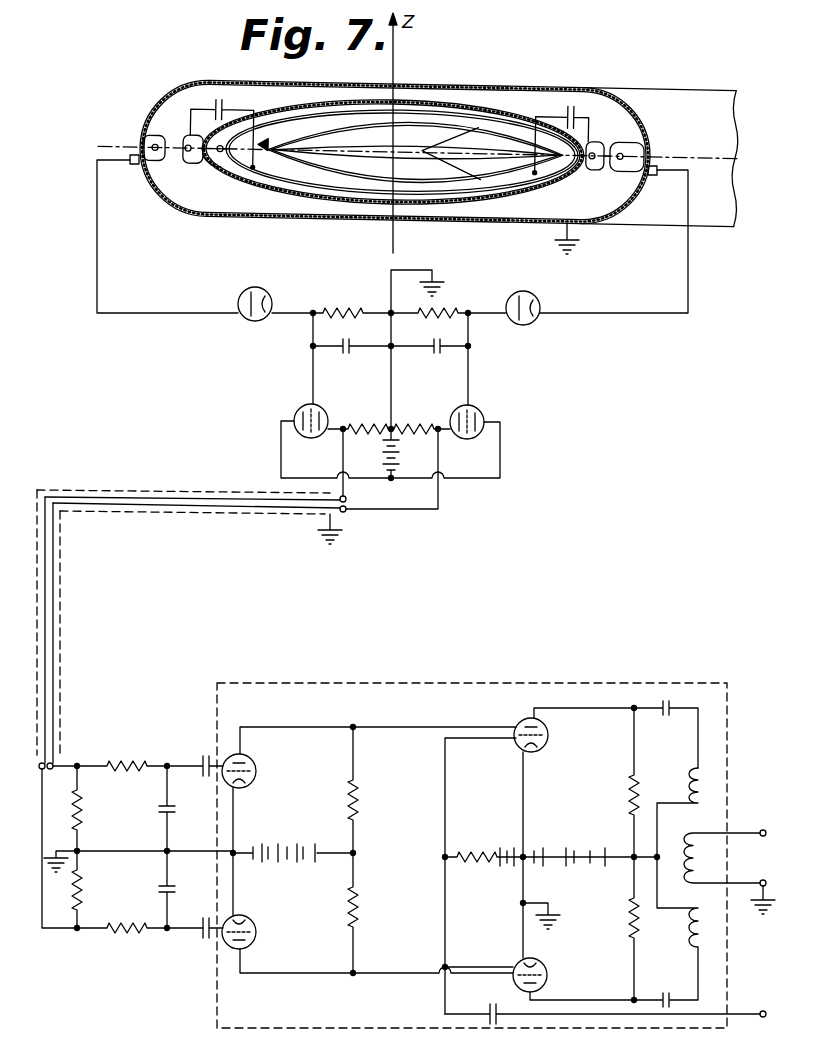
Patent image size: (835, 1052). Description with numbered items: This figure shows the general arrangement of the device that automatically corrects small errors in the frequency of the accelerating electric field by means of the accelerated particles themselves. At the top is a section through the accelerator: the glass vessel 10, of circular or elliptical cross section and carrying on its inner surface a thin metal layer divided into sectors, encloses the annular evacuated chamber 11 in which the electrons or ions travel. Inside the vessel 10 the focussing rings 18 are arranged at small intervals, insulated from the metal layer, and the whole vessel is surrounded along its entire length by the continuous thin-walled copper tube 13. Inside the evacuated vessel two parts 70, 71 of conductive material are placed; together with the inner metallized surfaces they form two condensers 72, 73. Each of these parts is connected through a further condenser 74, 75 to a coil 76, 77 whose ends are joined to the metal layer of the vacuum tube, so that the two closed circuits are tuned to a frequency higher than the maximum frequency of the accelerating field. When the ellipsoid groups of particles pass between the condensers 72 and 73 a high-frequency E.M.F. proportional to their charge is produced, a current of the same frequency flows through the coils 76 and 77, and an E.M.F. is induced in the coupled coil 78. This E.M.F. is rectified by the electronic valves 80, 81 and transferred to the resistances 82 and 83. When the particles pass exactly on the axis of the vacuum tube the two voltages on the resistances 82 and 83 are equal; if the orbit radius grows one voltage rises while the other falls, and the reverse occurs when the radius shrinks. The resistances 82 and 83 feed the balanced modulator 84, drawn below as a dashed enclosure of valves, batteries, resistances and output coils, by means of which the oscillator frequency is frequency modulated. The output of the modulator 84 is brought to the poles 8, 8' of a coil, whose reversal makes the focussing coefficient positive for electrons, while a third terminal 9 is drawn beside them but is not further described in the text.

The tube 13 is at (316, 84).
The glass vessel 10 is at (335, 103).
The annular evacuated chamber 11 is at (430, 110).
The rings 18 is at (352, 150).
The conductive part 70 is at (520, 140).
The conductive part 71 is at (258, 116).
The condenser 72 is at (545, 172).
The condenser 73 is at (220, 172).
The condenser 74 is at (158, 166).
The condenser 75 is at (222, 108).
The coil 76 is at (598, 166).
The coil 77 is at (190, 167).
The coil 78 is at (624, 138).
The electronic valve 80 is at (540, 302).
The electronic valve 81 is at (268, 300).
The resistance 82 is at (81, 887).
The resistance 83 is at (81, 807).
The balanced modulator 84 is at (447, 683).
The pole of the coil 8 is at (771, 832).
The pole of the coil 8' is at (773, 882).
The output terminal 9 is at (770, 1018).